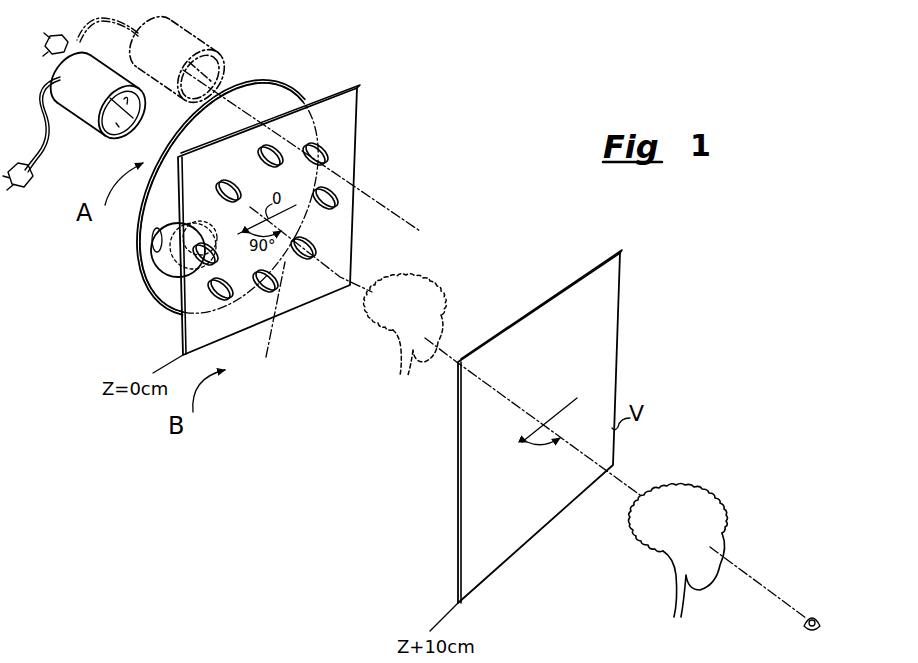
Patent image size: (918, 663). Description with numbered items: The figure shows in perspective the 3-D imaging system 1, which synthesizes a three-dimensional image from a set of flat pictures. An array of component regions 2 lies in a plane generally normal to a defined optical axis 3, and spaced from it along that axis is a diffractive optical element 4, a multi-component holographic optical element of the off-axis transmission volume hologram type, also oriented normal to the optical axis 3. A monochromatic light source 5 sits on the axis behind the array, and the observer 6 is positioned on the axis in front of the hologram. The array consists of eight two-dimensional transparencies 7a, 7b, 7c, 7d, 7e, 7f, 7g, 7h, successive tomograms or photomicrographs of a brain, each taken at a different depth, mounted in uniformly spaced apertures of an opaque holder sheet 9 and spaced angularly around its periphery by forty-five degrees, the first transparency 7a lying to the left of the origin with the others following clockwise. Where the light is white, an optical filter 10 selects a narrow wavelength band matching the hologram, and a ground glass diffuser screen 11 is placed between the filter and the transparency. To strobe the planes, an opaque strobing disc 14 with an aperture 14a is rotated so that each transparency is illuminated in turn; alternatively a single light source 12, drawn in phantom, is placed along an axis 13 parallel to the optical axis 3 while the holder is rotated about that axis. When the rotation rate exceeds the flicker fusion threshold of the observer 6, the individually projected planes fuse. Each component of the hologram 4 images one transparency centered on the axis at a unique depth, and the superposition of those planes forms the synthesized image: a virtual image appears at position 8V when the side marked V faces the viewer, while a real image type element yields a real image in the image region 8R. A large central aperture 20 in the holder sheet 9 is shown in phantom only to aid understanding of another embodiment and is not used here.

The 3-D imaging system 1 is at (206, 468).
The array of component regions 2 is at (370, 146).
The optical axis 3 is at (367, 277).
The diffractive optical element 4 is at (472, 517).
The monochromatic light source 5 is at (90, 115).
The observer 6 is at (830, 617).
The opaque holder sheet 9 is at (360, 115).
The optical filter 10 is at (177, 295).
The diffuser screen 11 is at (186, 260).
The single light source 12 is at (197, 32).
The axis of the transparencies 13 is at (373, 193).
The opaque strobing disc 14 is at (145, 250).
The aperture 14a is at (156, 250).
The large aperture 20 is at (269, 321).
The transparency 7a is at (210, 263).
The transparency 7b is at (226, 184).
The transparency 7c is at (265, 157).
The transparency 7d is at (322, 141).
The transparency 7e is at (334, 203).
The transparency 7f is at (313, 256).
The transparency 7g is at (270, 292).
The transparency 7h is at (226, 300).
The virtual image position 8V is at (440, 285).
The real image region 8R is at (698, 515).